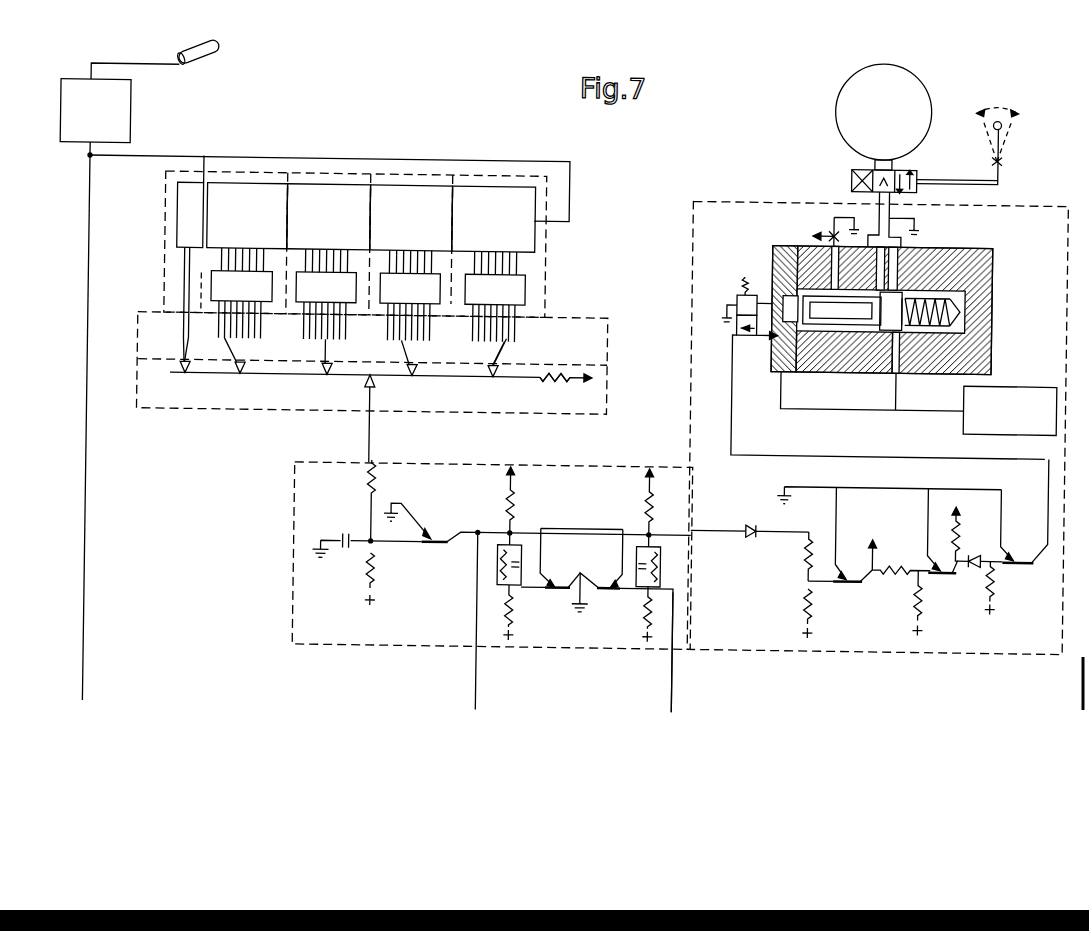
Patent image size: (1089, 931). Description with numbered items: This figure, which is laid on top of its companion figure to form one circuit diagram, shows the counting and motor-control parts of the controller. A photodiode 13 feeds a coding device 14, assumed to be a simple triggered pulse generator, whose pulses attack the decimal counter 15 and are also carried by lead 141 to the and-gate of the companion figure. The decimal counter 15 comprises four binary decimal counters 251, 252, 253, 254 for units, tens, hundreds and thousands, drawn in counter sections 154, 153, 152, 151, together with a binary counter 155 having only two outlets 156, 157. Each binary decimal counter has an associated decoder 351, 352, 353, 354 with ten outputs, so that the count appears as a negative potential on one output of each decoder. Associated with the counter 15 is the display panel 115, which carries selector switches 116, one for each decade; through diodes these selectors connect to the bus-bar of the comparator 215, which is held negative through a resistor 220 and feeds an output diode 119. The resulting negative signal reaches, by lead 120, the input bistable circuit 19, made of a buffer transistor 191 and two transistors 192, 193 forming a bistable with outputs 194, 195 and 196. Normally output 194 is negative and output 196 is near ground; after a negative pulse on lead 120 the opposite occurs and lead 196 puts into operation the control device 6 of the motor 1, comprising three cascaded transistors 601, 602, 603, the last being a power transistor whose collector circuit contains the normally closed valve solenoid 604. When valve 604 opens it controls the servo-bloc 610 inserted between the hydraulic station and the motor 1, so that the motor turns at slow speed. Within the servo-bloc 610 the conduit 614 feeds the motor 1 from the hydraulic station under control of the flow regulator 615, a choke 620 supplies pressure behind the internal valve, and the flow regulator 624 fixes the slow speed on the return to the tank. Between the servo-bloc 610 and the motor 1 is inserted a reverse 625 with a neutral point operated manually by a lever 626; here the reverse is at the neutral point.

The motor 1 is at (922, 104).
The control device 6 is at (739, 206).
The photodiode 13 is at (211, 86).
The coding device 14 is at (126, 126).
The decimal counter 15 is at (545, 274).
The input bistable circuit 19 is at (376, 644).
The display panel 115 is at (600, 335).
The selector switch 116 is at (504, 368).
The output diode 119 is at (366, 384).
The lead 120 is at (371, 446).
The lead 141 is at (76, 442).
The counter section 151 is at (490, 176).
The counter section 152 is at (412, 176).
The counter section 153 is at (330, 176).
The counter section 154 is at (245, 176).
The binary counter 155 is at (177, 212).
The outlet 156 is at (210, 266).
The outlet 157 is at (178, 292).
The transistor 191 is at (435, 531).
The transistor 192 is at (560, 599).
The transistor 193 is at (590, 599).
The output 194 is at (476, 676).
The output line 195 is at (673, 692).
The output 196 is at (714, 534).
The comparator 215 is at (607, 388).
The resistor 220 is at (563, 385).
The binary decimal counter 251 is at (494, 219).
The binary decimal counter 252 is at (411, 218).
The binary decimal counter 253 is at (329, 217).
The binary decimal counter 254 is at (247, 216).
The binary decimal decoder 351 is at (494, 321).
The decoder 352 is at (409, 320).
The decoder 353 is at (325, 319).
The decoder 354 is at (241, 318).
The transistor 601 is at (848, 590).
The transistor 602 is at (947, 590).
The power transistor 603 is at (1020, 590).
The normally closed valve solenoid 604 is at (732, 340).
The servo-bloc 610 is at (992, 358).
The conduit 614 is at (900, 375).
The flow regulator 615 is at (895, 384).
The choke 620 is at (779, 405).
The flow regulator 624 is at (826, 236).
The reverse 625 is at (851, 172).
The lever 626 is at (1000, 136).